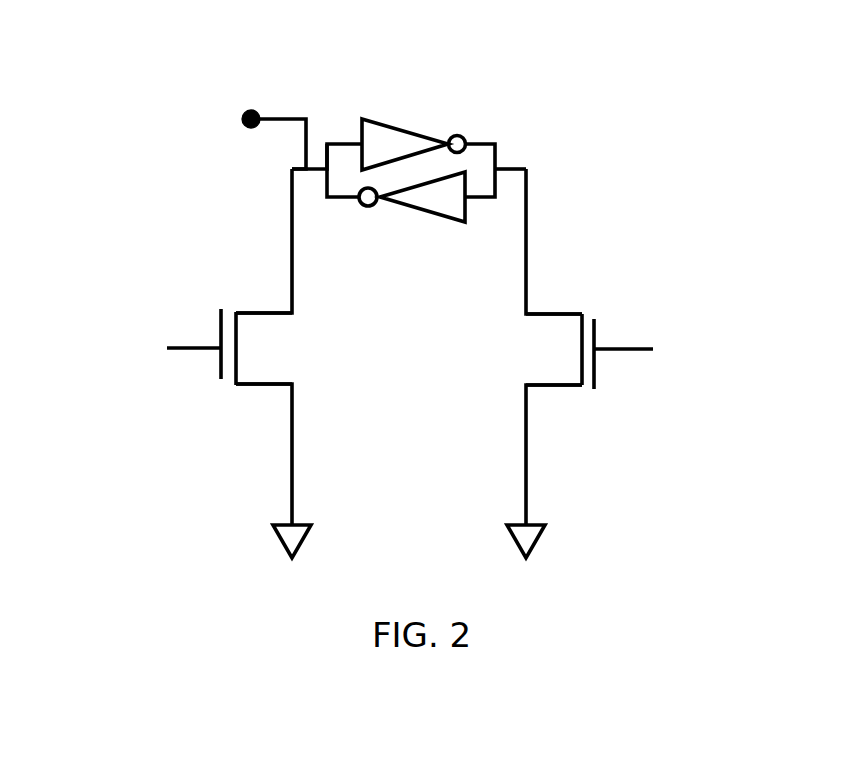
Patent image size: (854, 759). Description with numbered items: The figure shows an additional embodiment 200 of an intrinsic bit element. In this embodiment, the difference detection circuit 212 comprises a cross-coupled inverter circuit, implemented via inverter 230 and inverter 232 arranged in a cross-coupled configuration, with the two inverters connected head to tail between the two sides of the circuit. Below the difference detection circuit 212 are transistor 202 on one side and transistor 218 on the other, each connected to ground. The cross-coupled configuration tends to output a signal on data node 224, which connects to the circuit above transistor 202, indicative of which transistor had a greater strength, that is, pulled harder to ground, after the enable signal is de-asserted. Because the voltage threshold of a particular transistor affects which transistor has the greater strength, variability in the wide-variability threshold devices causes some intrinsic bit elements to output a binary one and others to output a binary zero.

The intrinsic bit element embodiment 200 is at (122, 119).
The data node 224 is at (253, 110).
The difference detection circuit 212 is at (474, 103).
The inverter 232 is at (397, 143).
The inverter 230 is at (446, 198).
The transistor 202 is at (266, 292).
The transistor 218 is at (620, 328).